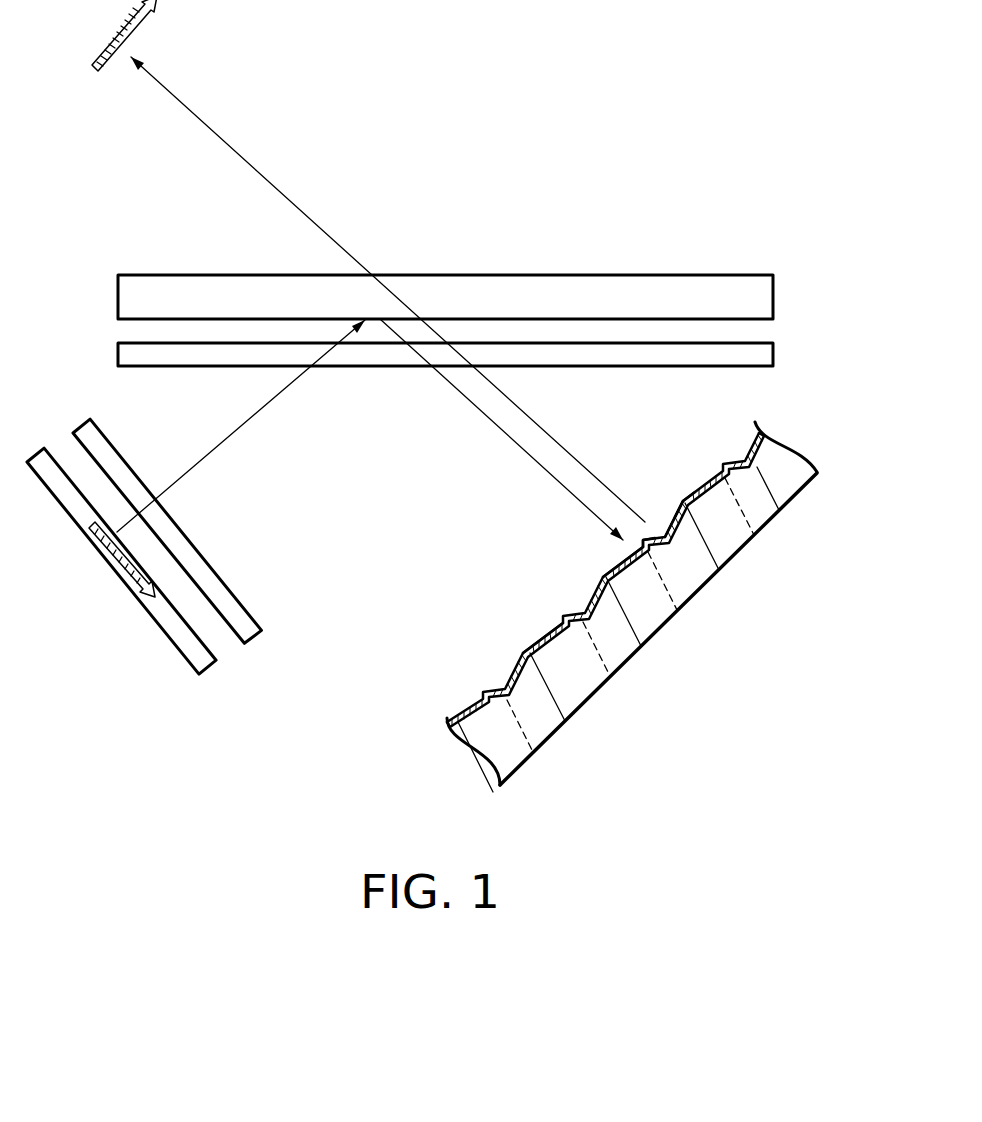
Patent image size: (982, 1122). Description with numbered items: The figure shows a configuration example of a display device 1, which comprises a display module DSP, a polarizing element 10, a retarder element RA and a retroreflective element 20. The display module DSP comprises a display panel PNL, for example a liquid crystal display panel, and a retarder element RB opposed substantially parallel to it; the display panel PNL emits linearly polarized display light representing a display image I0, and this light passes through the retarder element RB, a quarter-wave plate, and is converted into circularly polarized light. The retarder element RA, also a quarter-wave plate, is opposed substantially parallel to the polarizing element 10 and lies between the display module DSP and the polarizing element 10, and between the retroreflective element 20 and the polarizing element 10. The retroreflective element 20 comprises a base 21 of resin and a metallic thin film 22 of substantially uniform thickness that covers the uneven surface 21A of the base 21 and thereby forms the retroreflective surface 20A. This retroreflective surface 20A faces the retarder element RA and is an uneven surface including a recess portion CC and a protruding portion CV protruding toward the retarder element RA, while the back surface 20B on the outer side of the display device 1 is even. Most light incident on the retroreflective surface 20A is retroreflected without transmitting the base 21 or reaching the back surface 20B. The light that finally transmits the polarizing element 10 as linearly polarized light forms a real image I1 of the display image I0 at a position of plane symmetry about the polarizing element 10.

The display device 1 is at (560, 171).
The polarizing element 10 is at (769, 297).
The retarder element RA is at (769, 353).
The retroreflective element 20 is at (648, 591).
The retroreflective surface 20A is at (612, 567).
The back surface 20B is at (623, 665).
The base 21 is at (785, 488).
The surface 21A is at (548, 642).
The metallic thin film 22 is at (697, 490).
The protruding portion CV is at (680, 496).
The recess portion CC is at (662, 534).
The display image I0 is at (147, 575).
The real image I1 is at (142, 23).
The display module DSP is at (157, 579).
The display panel PNL is at (208, 663).
The retarder element RB is at (253, 635).